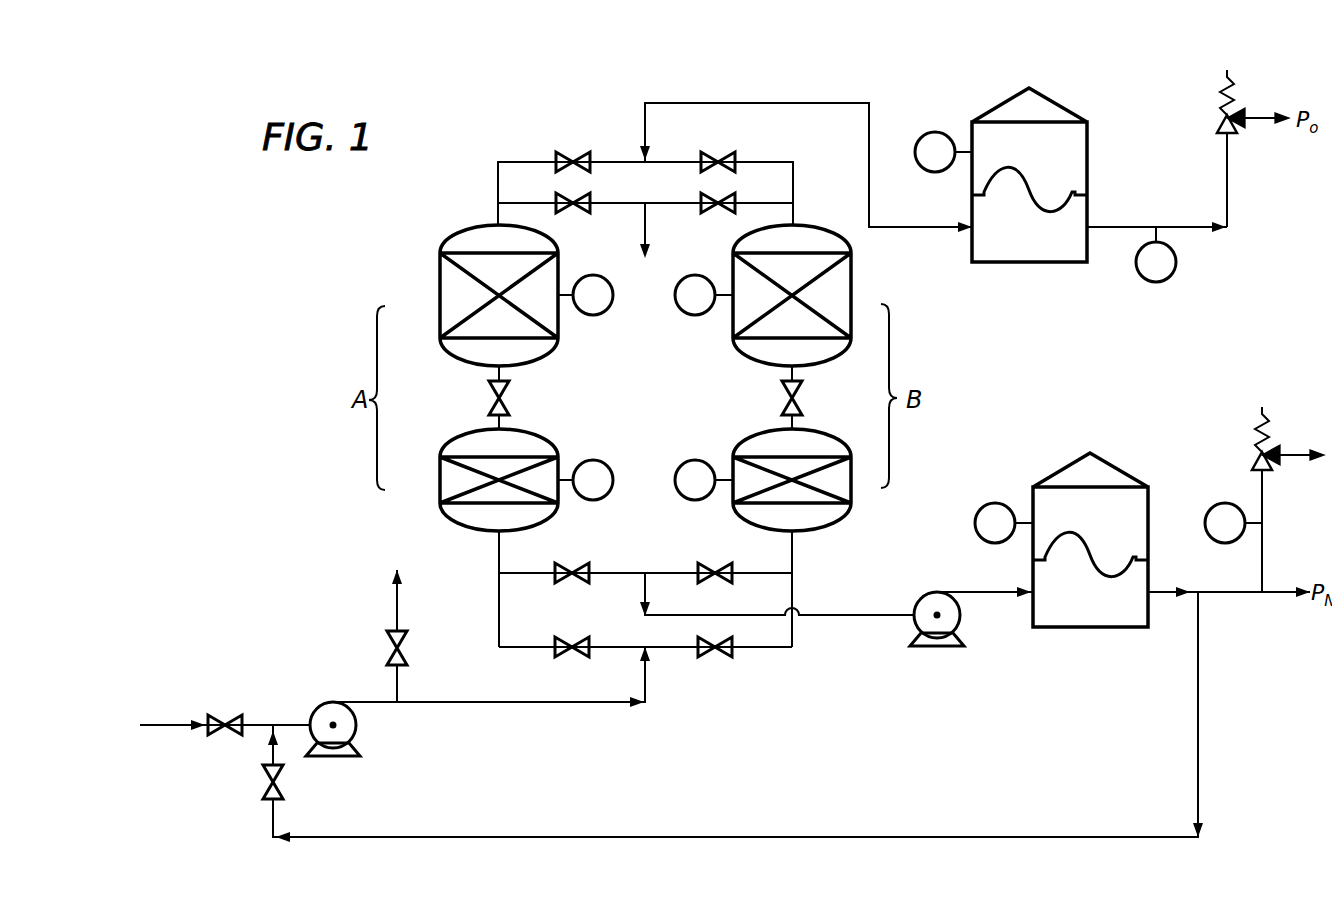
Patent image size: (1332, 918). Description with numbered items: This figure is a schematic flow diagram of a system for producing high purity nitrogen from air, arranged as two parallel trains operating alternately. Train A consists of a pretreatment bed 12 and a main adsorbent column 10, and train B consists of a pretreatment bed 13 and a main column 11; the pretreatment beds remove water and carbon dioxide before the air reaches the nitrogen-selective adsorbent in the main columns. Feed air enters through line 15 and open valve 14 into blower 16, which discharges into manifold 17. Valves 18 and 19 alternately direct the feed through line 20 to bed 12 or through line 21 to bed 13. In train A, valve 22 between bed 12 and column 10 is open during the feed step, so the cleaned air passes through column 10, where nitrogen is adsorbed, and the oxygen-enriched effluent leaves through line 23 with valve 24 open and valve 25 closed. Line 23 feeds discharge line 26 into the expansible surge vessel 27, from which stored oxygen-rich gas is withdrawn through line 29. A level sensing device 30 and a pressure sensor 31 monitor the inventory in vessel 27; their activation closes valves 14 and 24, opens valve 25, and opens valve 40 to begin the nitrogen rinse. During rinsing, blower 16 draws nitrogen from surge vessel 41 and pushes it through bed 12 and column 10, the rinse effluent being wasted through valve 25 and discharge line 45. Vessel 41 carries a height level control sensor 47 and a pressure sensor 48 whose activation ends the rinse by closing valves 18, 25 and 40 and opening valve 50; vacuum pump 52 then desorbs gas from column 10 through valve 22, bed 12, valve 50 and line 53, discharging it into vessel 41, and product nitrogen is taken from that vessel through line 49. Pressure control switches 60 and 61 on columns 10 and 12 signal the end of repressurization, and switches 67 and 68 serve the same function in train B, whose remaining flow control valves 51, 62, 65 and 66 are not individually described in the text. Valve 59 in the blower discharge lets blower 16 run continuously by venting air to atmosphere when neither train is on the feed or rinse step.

The adsorbent column 10 is at (456, 286).
The adsorbent column 11 is at (836, 282).
The pretreatment adsorbent bed 12 is at (468, 519).
The pretreatment adsorbent bed 13 is at (828, 519).
The valve 14 is at (232, 720).
The line 15 is at (182, 724).
The blower 16 is at (356, 732).
The manifold 17 is at (524, 650).
The valve 18 is at (560, 658).
The valve 19 is at (704, 658).
The line 20 is at (497, 618).
The line 21 is at (793, 588).
The valve 22 is at (507, 395).
The line 23 is at (498, 192).
The valve 24 is at (562, 152).
The valve 25 is at (580, 212).
The discharge line 26 is at (875, 229).
The expansible surge vessel 27 is at (1026, 252).
The line 29 is at (1229, 178).
The level sensing device 30 is at (930, 130).
The pressure sensor 31 is at (1176, 262).
The valve 40 is at (264, 788).
The surge vessel 41 is at (1074, 618).
The discharge line 45 is at (640, 238).
The height level control sensor 47 is at (984, 516).
The pressure sensor 48 is at (1222, 506).
The line 49 is at (1286, 594).
The valve 50 is at (584, 564).
The valve 51 is at (702, 565).
The vacuum pump 52 is at (958, 616).
The line 53 is at (866, 616).
The valve 59 is at (392, 642).
The control switch 60 is at (598, 315).
The control switch 61 is at (603, 461).
The valve between beds 11 and 13 62 is at (783, 395).
The valve 65 is at (706, 212).
The valve 66 is at (728, 152).
The pressure control switch 67 is at (692, 315).
The pressure control switch 68 is at (683, 462).